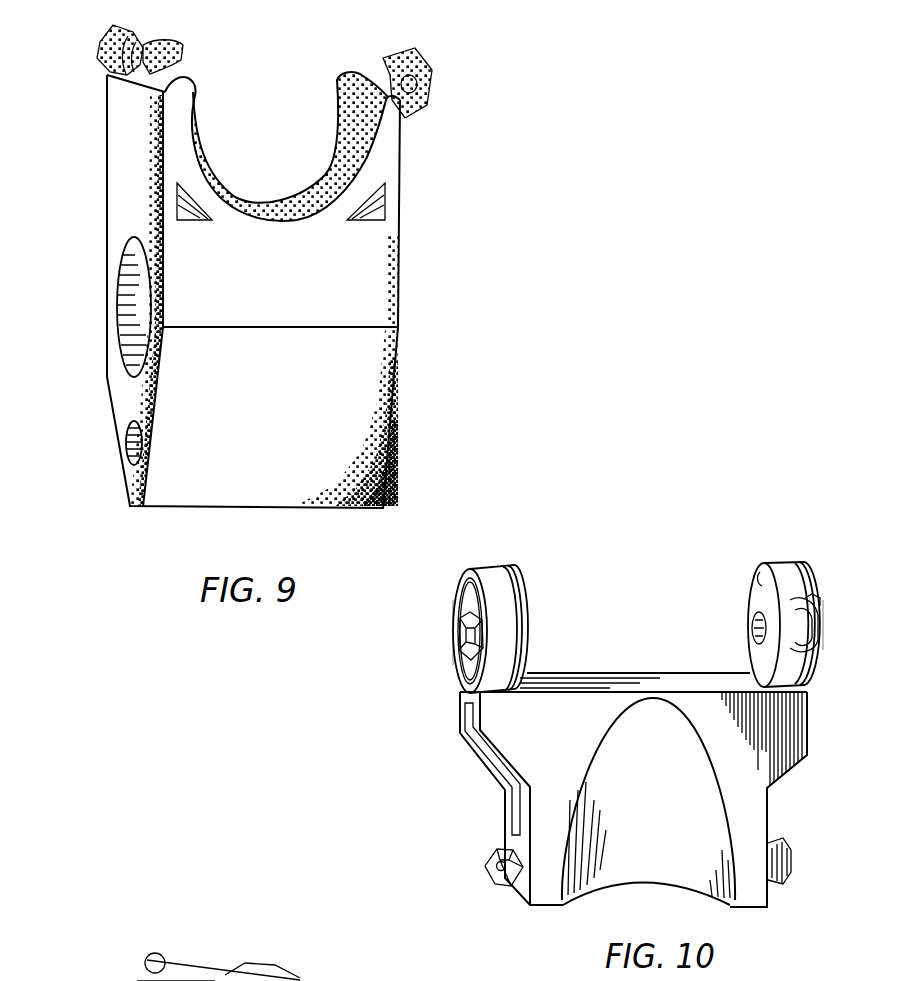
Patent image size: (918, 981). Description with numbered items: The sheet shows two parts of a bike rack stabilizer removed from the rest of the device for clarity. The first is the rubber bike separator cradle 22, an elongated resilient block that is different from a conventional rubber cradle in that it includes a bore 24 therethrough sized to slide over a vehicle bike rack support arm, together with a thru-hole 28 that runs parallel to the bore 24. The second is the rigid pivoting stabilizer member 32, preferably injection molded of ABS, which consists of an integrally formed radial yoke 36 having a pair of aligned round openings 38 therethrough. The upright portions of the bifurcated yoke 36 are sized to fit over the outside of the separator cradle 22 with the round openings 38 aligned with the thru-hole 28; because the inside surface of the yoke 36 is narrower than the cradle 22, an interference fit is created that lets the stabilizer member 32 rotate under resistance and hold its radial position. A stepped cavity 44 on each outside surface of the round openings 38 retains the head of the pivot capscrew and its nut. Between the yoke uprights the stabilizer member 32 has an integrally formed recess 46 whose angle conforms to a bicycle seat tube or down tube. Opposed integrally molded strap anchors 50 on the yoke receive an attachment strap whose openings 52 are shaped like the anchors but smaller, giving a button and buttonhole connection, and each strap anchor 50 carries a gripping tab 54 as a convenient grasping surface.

In FIG. 9, the rubber bike separator cradle 22 is at (398, 288).
In FIG. 9, the bore 24 is at (117, 285).
In FIG. 9, the thru-hole 28 is at (130, 450).
In FIG. 10, the pivoting stabilizer member 32 is at (458, 757).
In FIG. 10, the radial yoke 36 is at (568, 673).
In FIG. 10, the round openings 38 is at (462, 630).
In FIG. 10, the stepped cavity 44 is at (457, 660).
In FIG. 10, the recess 46 is at (623, 885).
In FIG. 10, the strap anchors 50 is at (487, 856).
In FIG. 10, the openings 52 is at (270, 968).
In FIG. 10, the gripping tab 54 is at (188, 963).